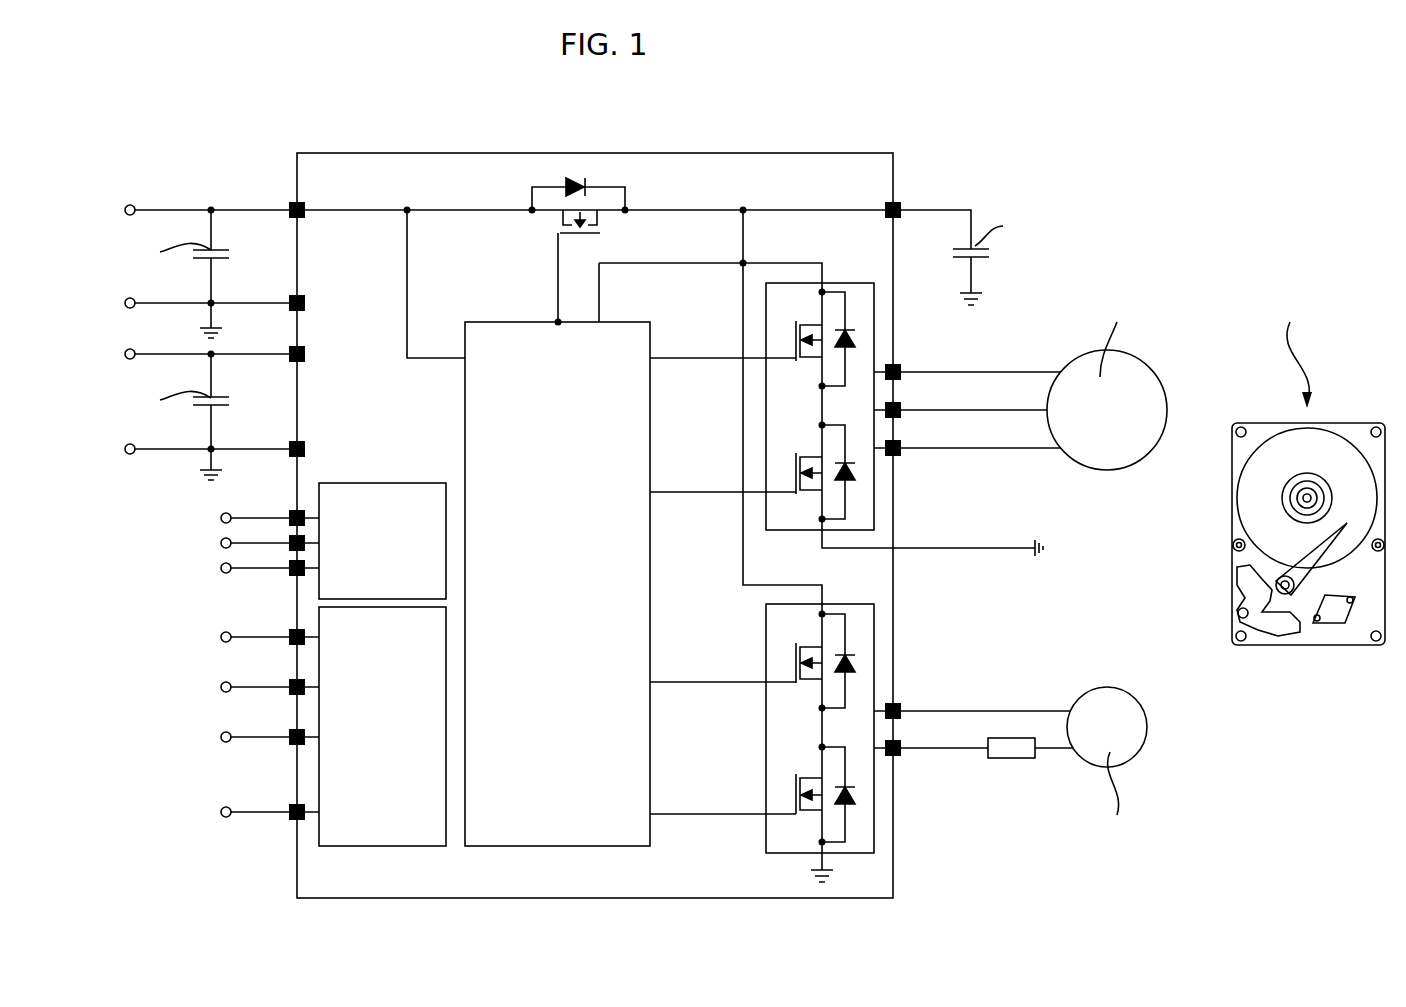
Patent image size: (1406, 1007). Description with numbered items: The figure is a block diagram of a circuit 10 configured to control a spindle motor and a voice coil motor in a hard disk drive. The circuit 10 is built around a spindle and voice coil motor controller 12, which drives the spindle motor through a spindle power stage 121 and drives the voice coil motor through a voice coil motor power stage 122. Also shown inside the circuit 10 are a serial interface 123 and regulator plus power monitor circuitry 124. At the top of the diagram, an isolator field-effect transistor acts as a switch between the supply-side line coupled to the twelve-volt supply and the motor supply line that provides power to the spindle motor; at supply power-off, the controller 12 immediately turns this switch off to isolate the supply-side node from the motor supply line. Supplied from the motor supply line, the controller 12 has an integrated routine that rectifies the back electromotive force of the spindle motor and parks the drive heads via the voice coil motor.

The circuit 10 is at (939, 132).
The spindle and VCM motor controller 12 is at (587, 835).
The spindle power stage 121 is at (727, 516).
The VCM power stage 122 is at (715, 872).
The serial interface 123 is at (383, 496).
The regulator plus power monitor circuitry 124 is at (380, 835).